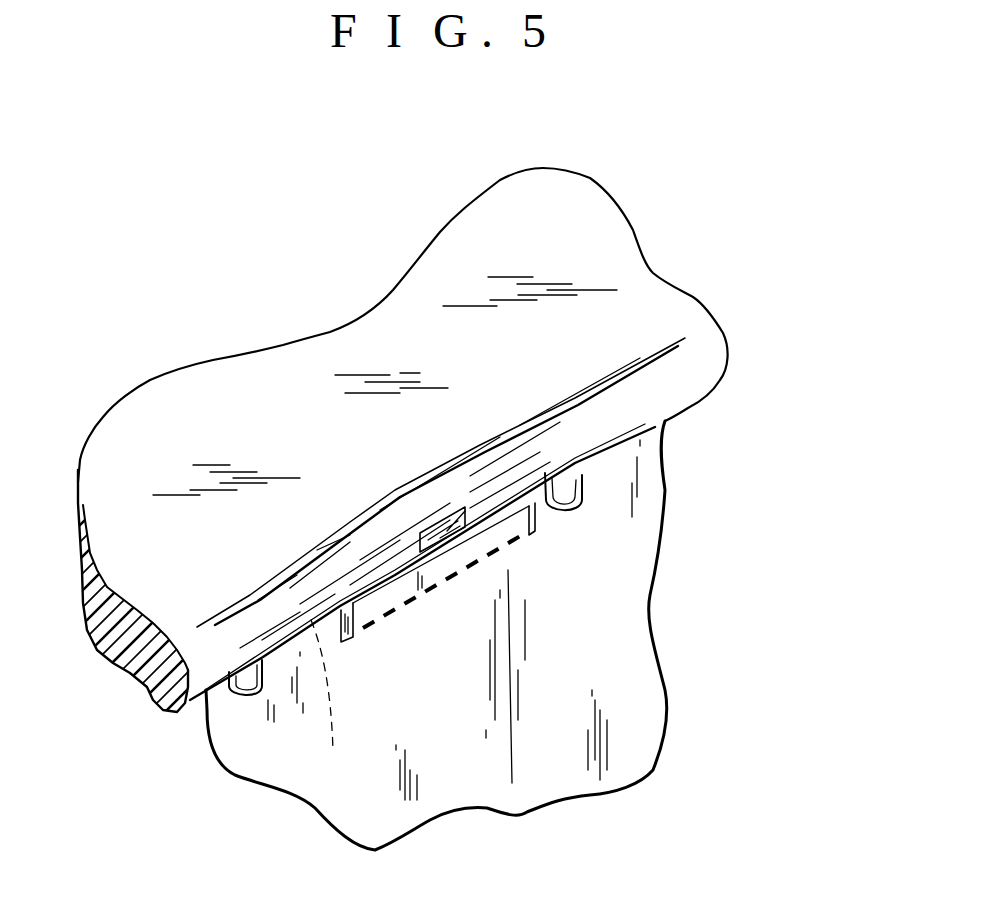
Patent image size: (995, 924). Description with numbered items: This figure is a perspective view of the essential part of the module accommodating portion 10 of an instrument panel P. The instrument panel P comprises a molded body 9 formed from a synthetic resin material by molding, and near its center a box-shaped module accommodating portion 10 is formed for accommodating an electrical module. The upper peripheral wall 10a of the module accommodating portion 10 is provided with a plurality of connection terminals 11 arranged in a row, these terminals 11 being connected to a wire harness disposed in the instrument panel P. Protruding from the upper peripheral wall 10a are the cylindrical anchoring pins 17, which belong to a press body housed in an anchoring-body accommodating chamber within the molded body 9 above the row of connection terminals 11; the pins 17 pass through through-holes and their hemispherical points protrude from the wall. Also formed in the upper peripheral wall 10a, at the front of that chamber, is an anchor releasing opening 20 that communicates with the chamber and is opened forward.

The instrument panel P is at (607, 248).
The molded body 9 is at (590, 413).
The module accommodating portion 10 is at (608, 540).
The upper peripheral wall 10a is at (330, 708).
The connection terminals 11 is at (375, 628).
The anchoring pins 17 is at (248, 694).
The anchor releasing opening 20 is at (447, 523).